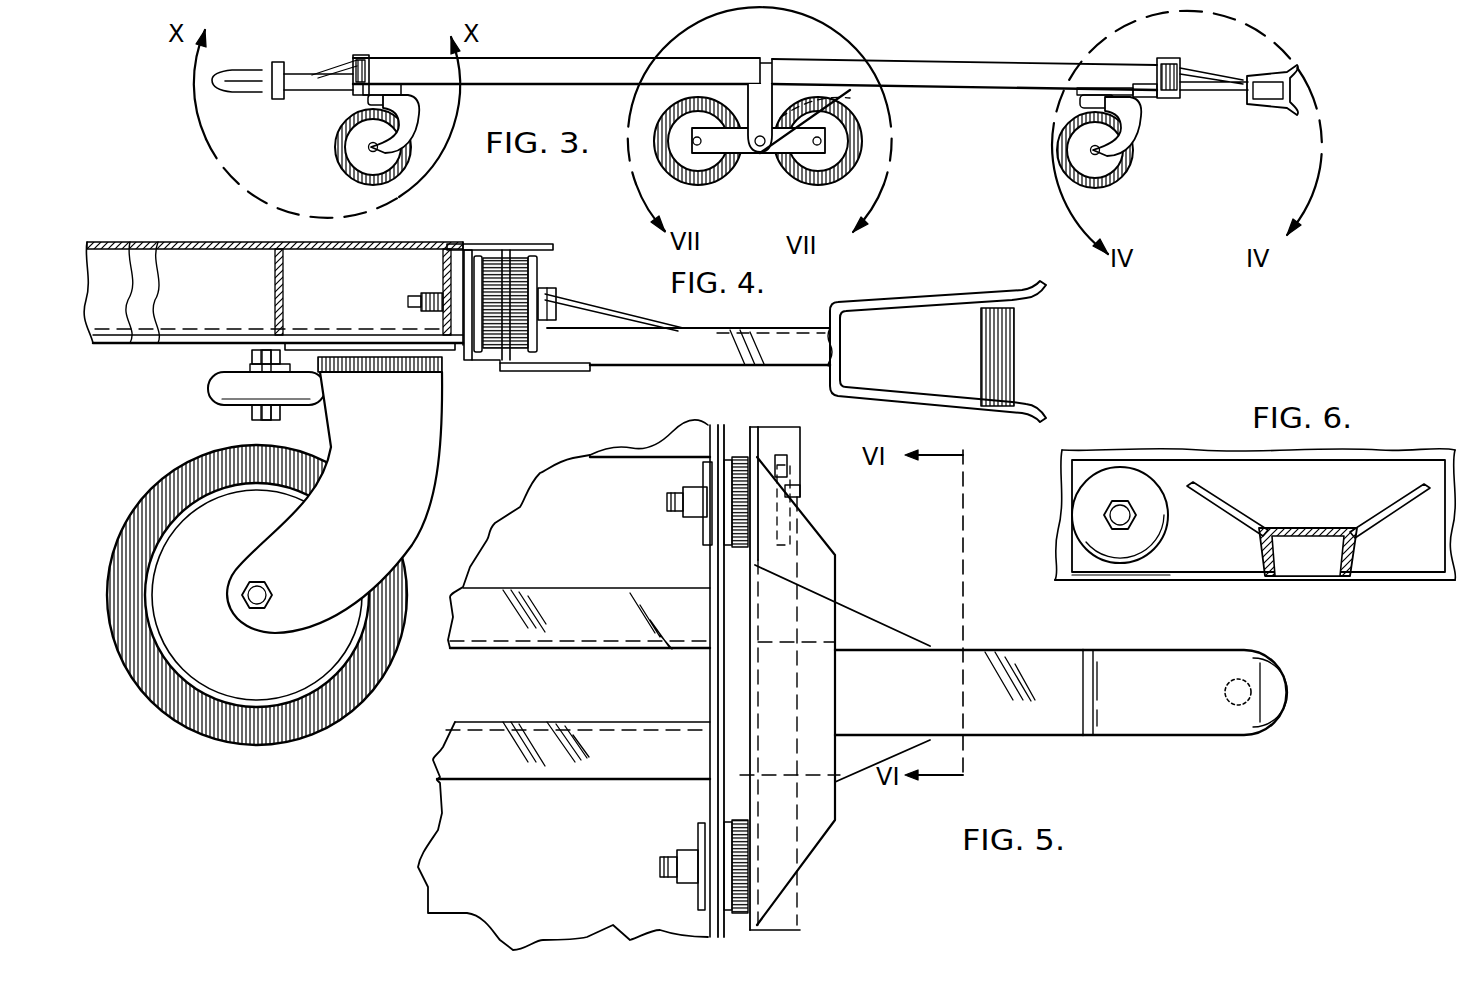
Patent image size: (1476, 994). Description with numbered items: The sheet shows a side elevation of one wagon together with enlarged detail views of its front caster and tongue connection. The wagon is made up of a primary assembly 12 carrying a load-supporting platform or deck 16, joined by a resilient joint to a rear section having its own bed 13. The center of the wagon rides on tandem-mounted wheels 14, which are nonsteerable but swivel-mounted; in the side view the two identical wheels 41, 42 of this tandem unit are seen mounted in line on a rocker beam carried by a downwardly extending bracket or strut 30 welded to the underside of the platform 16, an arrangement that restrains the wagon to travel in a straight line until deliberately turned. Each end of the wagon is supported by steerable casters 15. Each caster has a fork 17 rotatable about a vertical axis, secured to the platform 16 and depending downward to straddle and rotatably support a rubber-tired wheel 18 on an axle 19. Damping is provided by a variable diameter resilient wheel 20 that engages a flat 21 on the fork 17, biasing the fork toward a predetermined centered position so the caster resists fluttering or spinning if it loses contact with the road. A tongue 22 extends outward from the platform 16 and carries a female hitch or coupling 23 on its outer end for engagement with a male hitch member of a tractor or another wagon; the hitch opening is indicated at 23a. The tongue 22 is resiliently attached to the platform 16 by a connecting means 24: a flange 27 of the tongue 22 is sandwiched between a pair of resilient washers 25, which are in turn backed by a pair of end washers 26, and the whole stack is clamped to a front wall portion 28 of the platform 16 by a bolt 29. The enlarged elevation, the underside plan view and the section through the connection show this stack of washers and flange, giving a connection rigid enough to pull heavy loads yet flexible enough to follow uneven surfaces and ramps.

In FIG. 3, the primary assembly 12 is at (991, 60).
In FIG. 3, the bed of rear section 13 is at (531, 51).
In FIG. 3, the tandem-mounted wheels 14 is at (761, 172).
In FIG. 3, the casters 15 is at (333, 158).
In FIG. 4, the casters 15 is at (158, 748).
In FIG. 3, the load-supporting platform 16 is at (1040, 64).
In FIG. 4, the load-supporting platform 16 is at (273, 293).
In FIG. 5, the load-supporting platform 16 is at (602, 548).
In FIG. 4, the fork 17 is at (418, 513).
In FIG. 4, the rubber-tired wheel 18 is at (152, 503).
In FIG. 4, the axle 19 is at (240, 597).
In FIG. 4, the variable diameter resilient wheel 20 is at (207, 389).
In FIG. 4, the flat 21 is at (312, 409).
In FIG. 4, the tongue 22 is at (653, 362).
In FIG. 5, the tongue 22 is at (1010, 652).
In FIG. 6, the tongue 22 is at (1290, 529).
In FIG. 4, the female hitch 23 is at (975, 300).
In FIG. 5, the female hitch 23 is at (1200, 658).
In FIG. 4, the socket flange 23a is at (1014, 356).
In FIG. 5, the socket flange 23a is at (1247, 692).
In FIG. 4, the connecting means 24 is at (559, 262).
In FIG. 4, the resilient washers 25 is at (521, 256).
In FIG. 5, the resilient washers 25 is at (752, 456).
In FIG. 4, the end washers 26 is at (532, 352).
In FIG. 5, the end washers 26 is at (725, 462).
In FIG. 6, the end washers 26 is at (1140, 438).
In FIG. 4, the flange 27 is at (525, 293).
In FIG. 5, the flange 27 is at (806, 546).
In FIG. 6, the flange 27 is at (1221, 467).
In FIG. 4, the front wall portion 28 is at (470, 250).
In FIG. 5, the front wall portion 28 is at (720, 435).
In FIG. 6, the front wall portion 28 is at (1062, 467).
In FIG. 4, the bolt 29 is at (554, 305).
In FIG. 5, the bolt 29 is at (801, 493).
In FIG. 6, the bolt 29 is at (1118, 516).
In FIG. 3, the bracket 30 is at (835, 98).
In FIG. 3, the wheel 41 is at (674, 107).
In FIG. 3, the wheel 42 is at (838, 178).